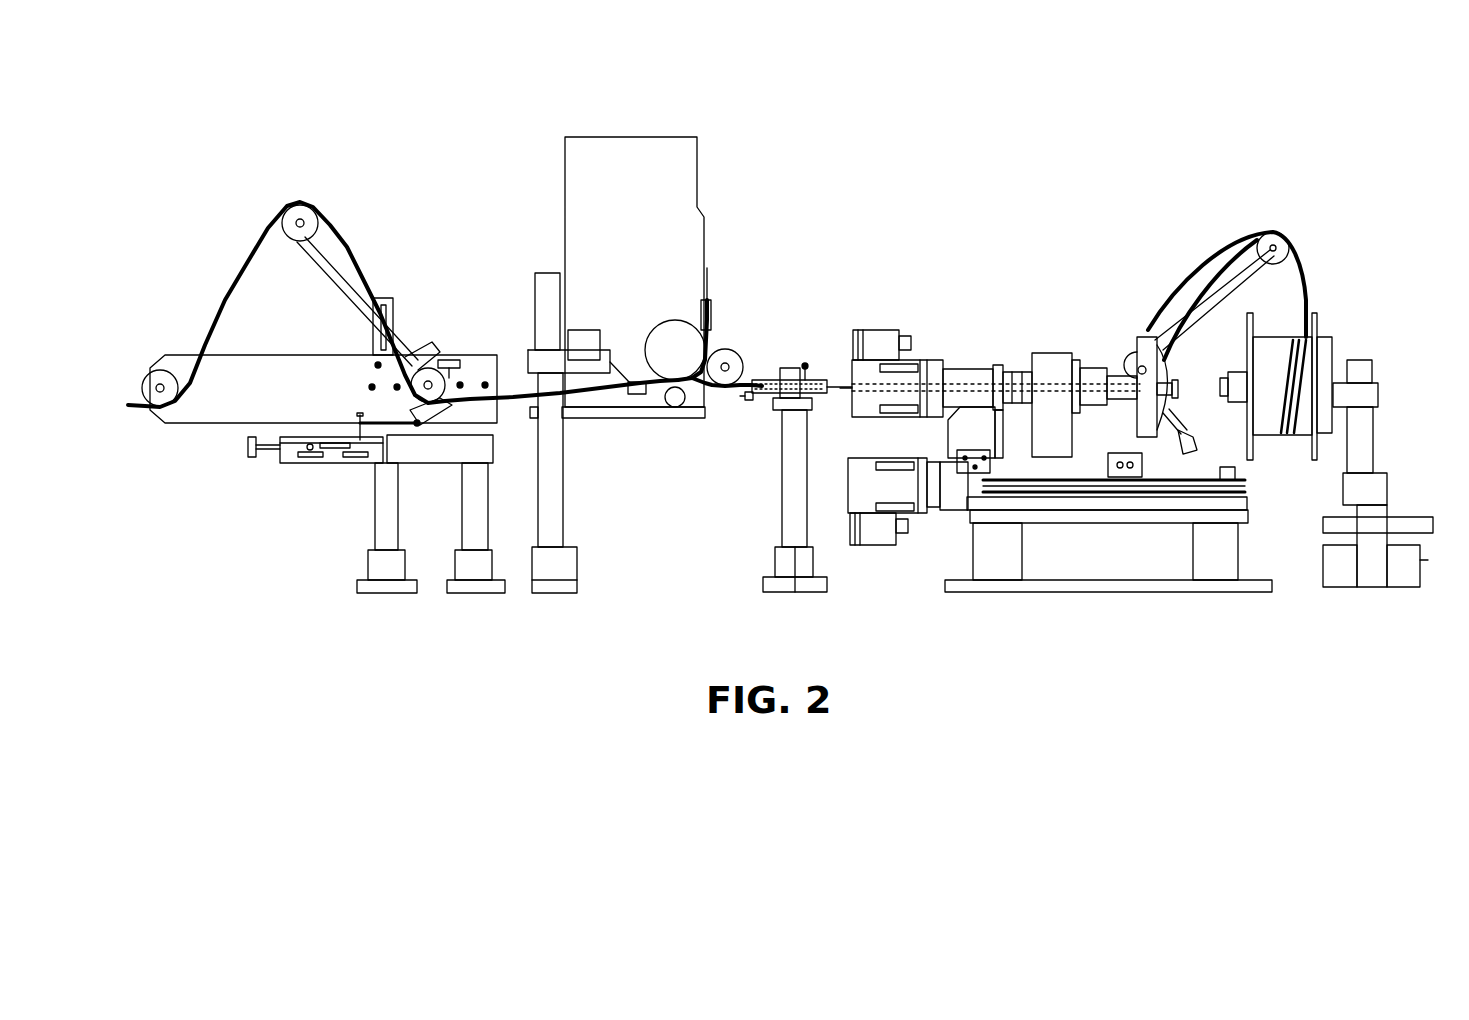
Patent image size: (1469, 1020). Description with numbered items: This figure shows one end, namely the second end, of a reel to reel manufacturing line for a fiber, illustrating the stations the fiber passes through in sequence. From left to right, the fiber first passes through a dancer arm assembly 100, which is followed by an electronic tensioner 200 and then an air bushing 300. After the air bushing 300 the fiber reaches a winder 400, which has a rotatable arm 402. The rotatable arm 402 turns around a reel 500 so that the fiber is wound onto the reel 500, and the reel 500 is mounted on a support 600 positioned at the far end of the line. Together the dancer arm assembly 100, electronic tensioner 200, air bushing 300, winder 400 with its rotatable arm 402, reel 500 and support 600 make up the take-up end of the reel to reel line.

The dancer arm assembly 100 is at (378, 270).
The electronic tensioner 200 is at (668, 127).
The air bushing 300 is at (792, 360).
The winder 400 is at (1048, 337).
The rotatable arm 402 is at (1150, 333).
The reel 500 is at (1322, 330).
The support 600 is at (1345, 587).